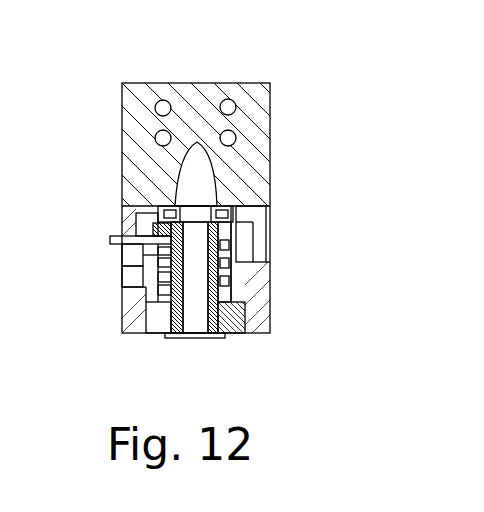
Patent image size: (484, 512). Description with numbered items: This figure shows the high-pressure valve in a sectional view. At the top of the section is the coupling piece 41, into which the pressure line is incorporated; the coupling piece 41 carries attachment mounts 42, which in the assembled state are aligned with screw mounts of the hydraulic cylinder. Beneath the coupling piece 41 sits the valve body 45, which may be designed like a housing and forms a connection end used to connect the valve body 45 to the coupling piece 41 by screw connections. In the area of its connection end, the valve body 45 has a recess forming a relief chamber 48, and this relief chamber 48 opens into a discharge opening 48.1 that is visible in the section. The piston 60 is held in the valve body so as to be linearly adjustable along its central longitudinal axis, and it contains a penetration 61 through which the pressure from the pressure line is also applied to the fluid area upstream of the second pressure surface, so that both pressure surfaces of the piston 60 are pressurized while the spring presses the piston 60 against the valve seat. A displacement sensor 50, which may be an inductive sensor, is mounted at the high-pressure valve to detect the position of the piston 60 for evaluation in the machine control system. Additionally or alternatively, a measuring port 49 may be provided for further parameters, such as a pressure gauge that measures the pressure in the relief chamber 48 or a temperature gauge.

The coupling piece 41 is at (136, 86).
The attachment mounts 42 is at (230, 104).
The valve body 45 is at (130, 273).
The relief chamber 48 is at (127, 257).
The discharge opening 48.1 is at (264, 252).
The measuring port 49 is at (120, 288).
The displacement sensor 50 is at (117, 241).
The piston 60 is at (170, 308).
The penetration 61 is at (196, 313).